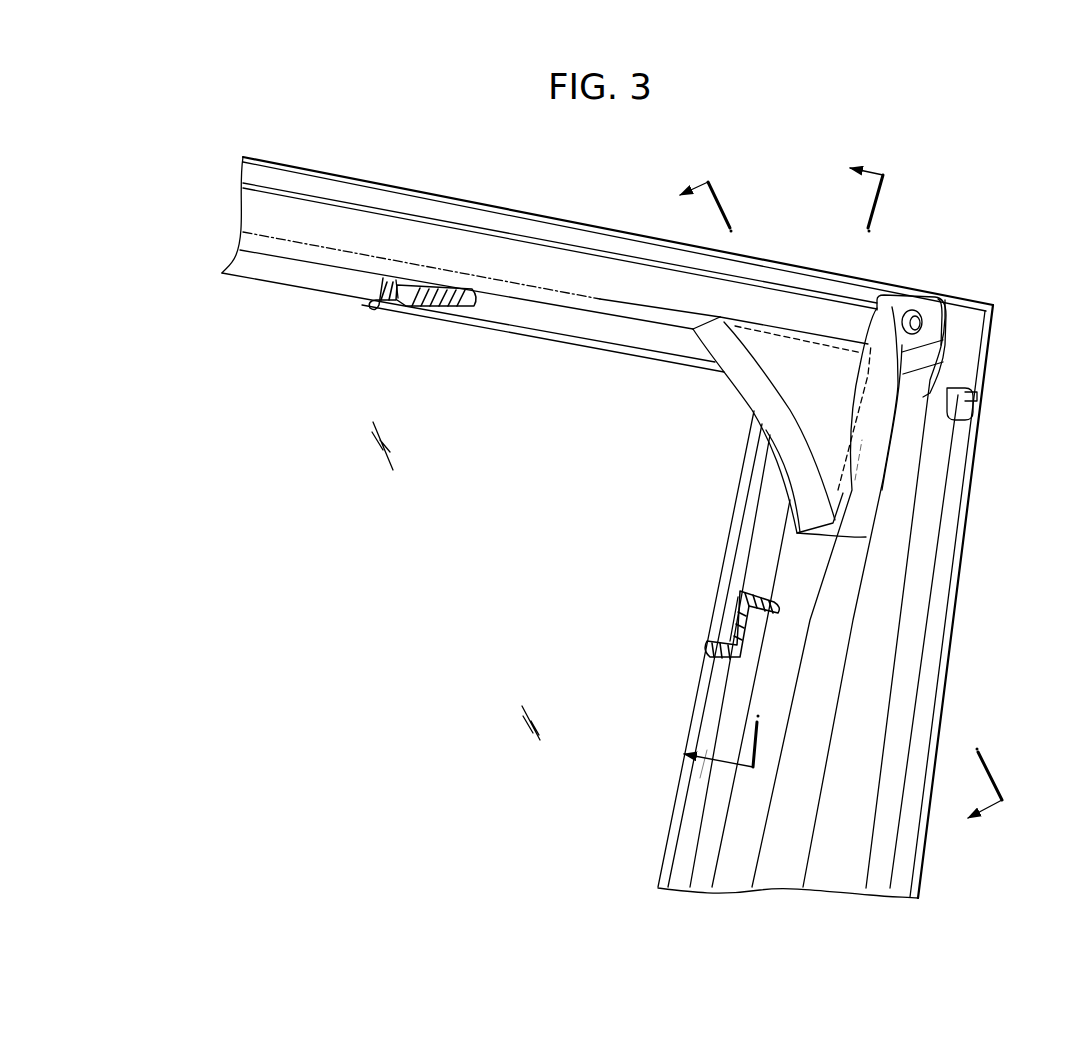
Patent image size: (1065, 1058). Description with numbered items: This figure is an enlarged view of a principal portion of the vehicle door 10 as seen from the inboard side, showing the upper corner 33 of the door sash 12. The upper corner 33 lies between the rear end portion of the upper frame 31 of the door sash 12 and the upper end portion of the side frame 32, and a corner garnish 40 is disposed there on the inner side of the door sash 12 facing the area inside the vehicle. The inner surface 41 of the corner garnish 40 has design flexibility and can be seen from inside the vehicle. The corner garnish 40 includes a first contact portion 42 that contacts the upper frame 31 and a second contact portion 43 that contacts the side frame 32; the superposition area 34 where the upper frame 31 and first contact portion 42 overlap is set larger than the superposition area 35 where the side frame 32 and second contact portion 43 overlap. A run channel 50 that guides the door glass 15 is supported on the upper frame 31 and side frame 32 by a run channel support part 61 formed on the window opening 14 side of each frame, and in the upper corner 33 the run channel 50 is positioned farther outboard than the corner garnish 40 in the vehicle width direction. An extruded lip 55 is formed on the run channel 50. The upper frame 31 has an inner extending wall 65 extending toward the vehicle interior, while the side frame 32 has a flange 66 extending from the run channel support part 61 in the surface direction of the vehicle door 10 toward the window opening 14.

The vehicle door 10 is at (170, 203).
The door sash 12 is at (431, 191).
The window opening 14 is at (672, 823).
The door glass 15 is at (387, 402).
The upper frame 31 is at (526, 203).
The side frame 32 is at (944, 690).
The upper corner 33 is at (611, 460).
The superposition area 34 is at (758, 316).
The superposition area 35 is at (866, 425).
The corner garnish 40 is at (743, 393).
The inner surface 41 is at (828, 372).
The first contact portion 42 is at (795, 311).
The second contact portion 43 is at (862, 447).
The run channel 50 is at (596, 347).
The extruded lip 55 is at (866, 537).
The run channel support part 61 is at (341, 290).
The inner extending wall 65 is at (612, 308).
The flange 66 is at (712, 776).